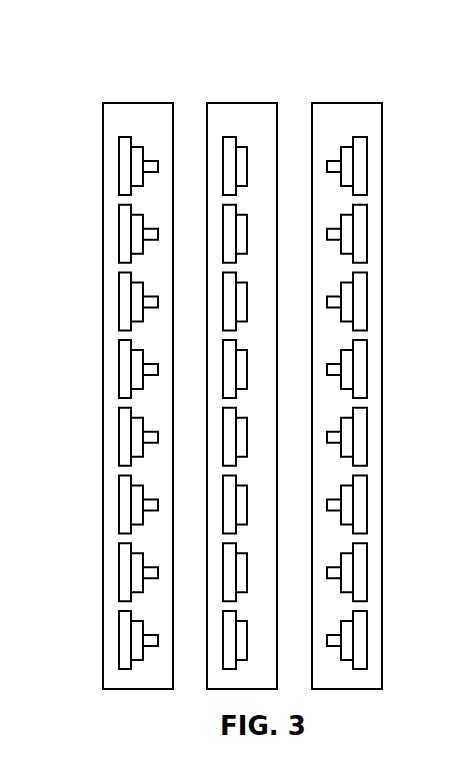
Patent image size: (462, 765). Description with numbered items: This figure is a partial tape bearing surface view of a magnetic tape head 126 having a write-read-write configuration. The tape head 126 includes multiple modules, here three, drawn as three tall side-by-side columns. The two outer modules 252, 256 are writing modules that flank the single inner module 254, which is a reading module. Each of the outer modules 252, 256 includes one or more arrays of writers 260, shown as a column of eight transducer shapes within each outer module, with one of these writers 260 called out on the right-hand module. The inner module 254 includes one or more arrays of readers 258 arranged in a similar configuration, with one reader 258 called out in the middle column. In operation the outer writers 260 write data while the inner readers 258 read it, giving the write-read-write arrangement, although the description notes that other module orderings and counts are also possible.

The tape head 126 is at (72, 71).
The outer module 252 is at (128, 86).
The inner module 254 is at (239, 84).
The outer module 256 is at (335, 84).
The readers 258 is at (247, 301).
The writers 260 is at (367, 367).